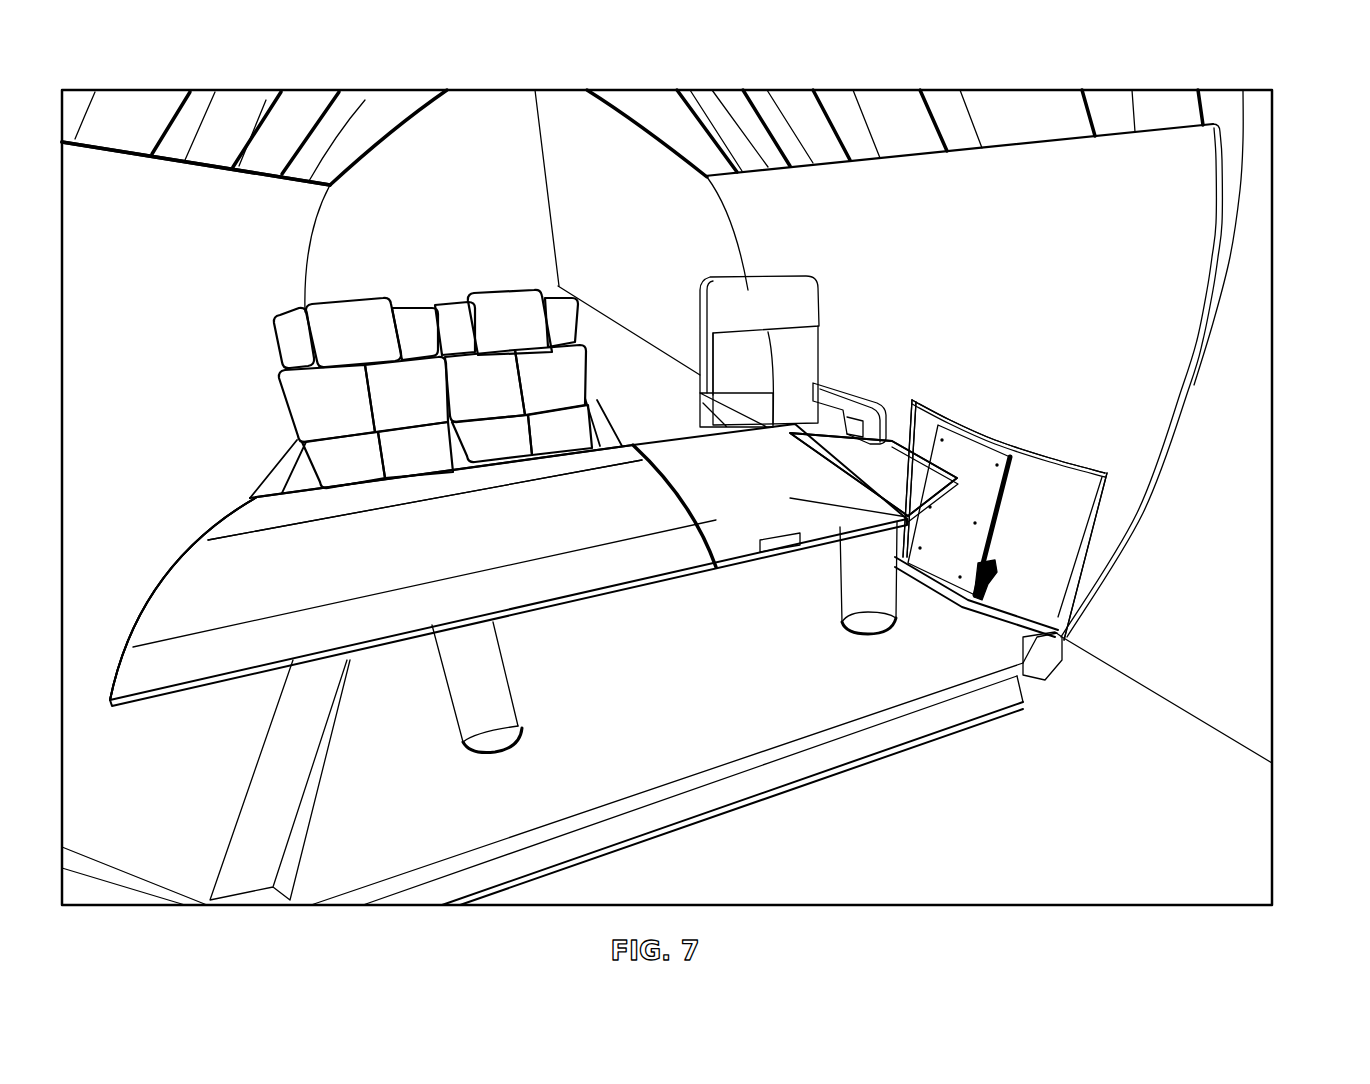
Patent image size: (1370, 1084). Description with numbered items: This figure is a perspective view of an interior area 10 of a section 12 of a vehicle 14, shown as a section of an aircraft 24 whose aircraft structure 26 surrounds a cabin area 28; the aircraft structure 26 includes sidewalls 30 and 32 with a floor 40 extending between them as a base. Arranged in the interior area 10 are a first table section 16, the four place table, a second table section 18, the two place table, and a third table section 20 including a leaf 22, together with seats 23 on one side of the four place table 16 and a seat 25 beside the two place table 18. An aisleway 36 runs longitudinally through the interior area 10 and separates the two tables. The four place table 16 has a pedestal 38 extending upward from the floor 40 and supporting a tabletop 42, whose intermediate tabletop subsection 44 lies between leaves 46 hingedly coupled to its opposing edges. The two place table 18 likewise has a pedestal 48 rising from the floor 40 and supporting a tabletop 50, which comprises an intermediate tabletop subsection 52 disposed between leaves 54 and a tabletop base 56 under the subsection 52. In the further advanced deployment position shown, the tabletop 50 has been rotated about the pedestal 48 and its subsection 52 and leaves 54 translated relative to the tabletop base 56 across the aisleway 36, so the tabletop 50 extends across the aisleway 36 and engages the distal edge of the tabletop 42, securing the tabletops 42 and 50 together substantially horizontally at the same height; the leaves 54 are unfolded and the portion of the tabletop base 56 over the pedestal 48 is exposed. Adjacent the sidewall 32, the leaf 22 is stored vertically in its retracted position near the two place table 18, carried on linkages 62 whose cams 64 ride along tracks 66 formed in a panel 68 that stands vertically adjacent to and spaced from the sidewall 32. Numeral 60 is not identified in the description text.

The interior area 10 is at (628, 178).
The section 12 is at (1220, 247).
The vehicle 14 is at (1110, 76).
The first table section 16 is at (213, 598).
The second table section 18 is at (905, 457).
The third table section 20 is at (1077, 520).
The leaf 22 is at (1057, 583).
The seats 23 is at (350, 322).
The aircraft 24 is at (1225, 76).
The seat 25 is at (795, 293).
The aircraft structure 26 is at (1208, 307).
The cabin area 28 is at (673, 262).
The sidewall 30 is at (100, 328).
The sidewall 32 is at (1147, 390).
The aisleway 36 is at (678, 424).
The pedestal 38 is at (500, 707).
The floor 40 is at (720, 747).
The tabletop 42 is at (140, 630).
The intermediate tabletop subsection 44 is at (399, 553).
The leaves 46 is at (252, 517).
The pedestal 48 is at (860, 625).
The tabletop 50 is at (740, 560).
The intermediate tabletop subsection 52 is at (810, 453).
The leaves 54 is at (747, 433).
The tabletop base 56 is at (933, 458).
The top rail 60 is at (937, 443).
The linkages 62 is at (965, 607).
The cams 64 is at (995, 563).
The tracks 66 is at (1005, 497).
The panel 68 is at (934, 545).